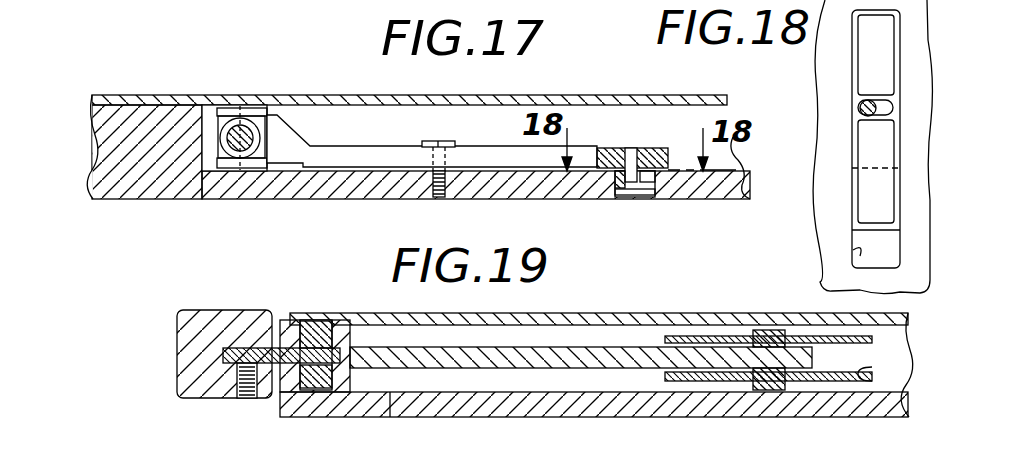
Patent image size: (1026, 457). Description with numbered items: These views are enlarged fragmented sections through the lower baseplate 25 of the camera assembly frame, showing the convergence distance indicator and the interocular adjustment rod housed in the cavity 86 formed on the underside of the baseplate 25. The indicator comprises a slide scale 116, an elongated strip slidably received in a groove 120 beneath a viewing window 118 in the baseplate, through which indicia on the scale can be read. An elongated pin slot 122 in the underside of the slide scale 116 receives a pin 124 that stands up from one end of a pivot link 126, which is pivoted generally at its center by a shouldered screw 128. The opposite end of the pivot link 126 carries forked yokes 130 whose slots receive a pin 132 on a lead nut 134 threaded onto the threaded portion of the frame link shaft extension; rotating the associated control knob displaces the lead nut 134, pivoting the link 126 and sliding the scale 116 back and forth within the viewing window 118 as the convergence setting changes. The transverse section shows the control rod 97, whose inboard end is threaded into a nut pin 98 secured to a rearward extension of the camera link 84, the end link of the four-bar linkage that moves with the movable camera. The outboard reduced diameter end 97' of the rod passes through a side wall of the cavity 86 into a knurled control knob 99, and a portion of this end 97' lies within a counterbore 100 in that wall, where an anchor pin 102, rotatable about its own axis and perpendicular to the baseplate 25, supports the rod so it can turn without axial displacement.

In FIG. 18, the lower baseplate 25 is at (820, 164).
In FIG. 19, the lower baseplate 25 is at (598, 414).
In FIG. 19, the camera link 84 is at (866, 372).
In FIG. 19, the cavity 86 is at (415, 394).
In FIG. 19, the control rod 97 is at (581, 327).
In FIG. 19, the reduced diameter end 97' is at (312, 343).
In FIG. 19, the nut pin 98 is at (770, 330).
In FIG. 19, the control knob 99 is at (200, 312).
In FIG. 19, the counterbore 100 is at (312, 390).
In FIG. 19, the anchor pin 102 is at (318, 322).
In FIG. 17, the slide scale 116 is at (630, 197).
In FIG. 17, the viewing window 118 is at (625, 197).
In FIG. 18, the viewing window 118 is at (855, 255).
In FIG. 17, the groove 120 is at (655, 176).
In FIG. 18, the pin slot 122 is at (880, 100).
In FIG. 17, the pin 124 is at (632, 148).
In FIG. 18, the pin 124 is at (860, 108).
In FIG. 17, the pivot link 126 is at (505, 146).
In FIG. 17, the shouldered screw 128 is at (436, 198).
In FIG. 17, the forked yokes 130 is at (252, 116).
In FIG. 17, the pin 132 is at (252, 116).
In FIG. 17, the lead nut 134 is at (222, 140).